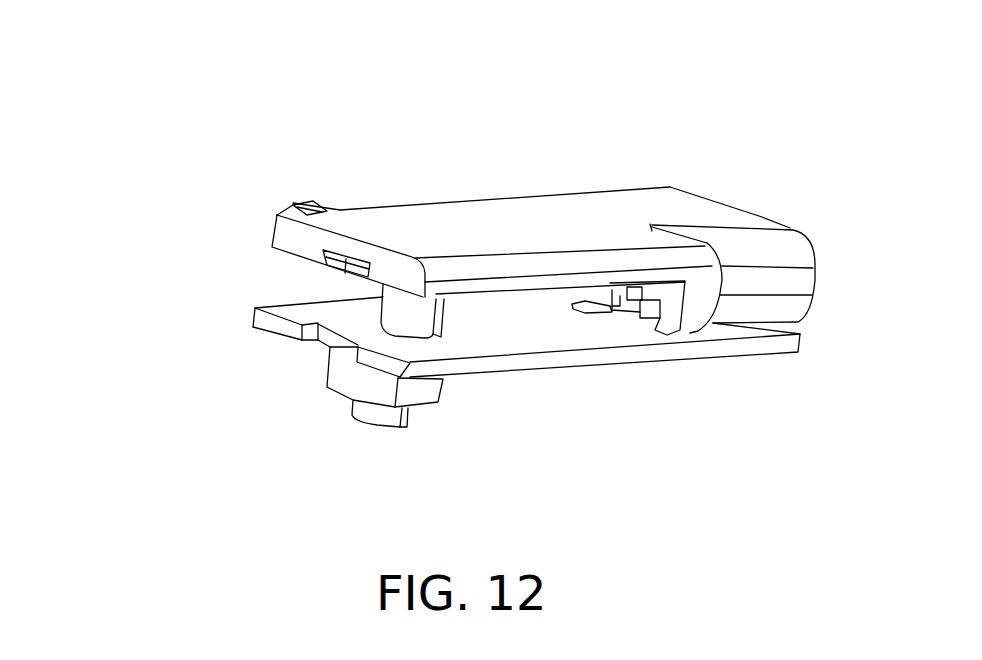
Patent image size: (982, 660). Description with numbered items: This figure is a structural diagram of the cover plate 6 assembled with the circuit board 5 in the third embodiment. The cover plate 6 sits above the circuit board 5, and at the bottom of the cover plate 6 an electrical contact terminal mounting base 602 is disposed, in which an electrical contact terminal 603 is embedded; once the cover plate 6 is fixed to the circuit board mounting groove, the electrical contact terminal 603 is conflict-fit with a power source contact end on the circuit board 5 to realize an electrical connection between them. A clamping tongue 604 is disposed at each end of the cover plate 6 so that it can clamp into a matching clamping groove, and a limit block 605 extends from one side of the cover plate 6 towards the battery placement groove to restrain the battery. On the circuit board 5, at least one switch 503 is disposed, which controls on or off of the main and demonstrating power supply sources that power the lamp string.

The cover plate 6 is at (522, 227).
The limit block 605 is at (315, 201).
The clamping tongue 604 is at (323, 264).
The circuit board 5 is at (527, 357).
The switch 503 is at (355, 383).
The electrical contact terminal 603 is at (681, 298).
The electrical contact terminal mounting base 602 is at (678, 300).